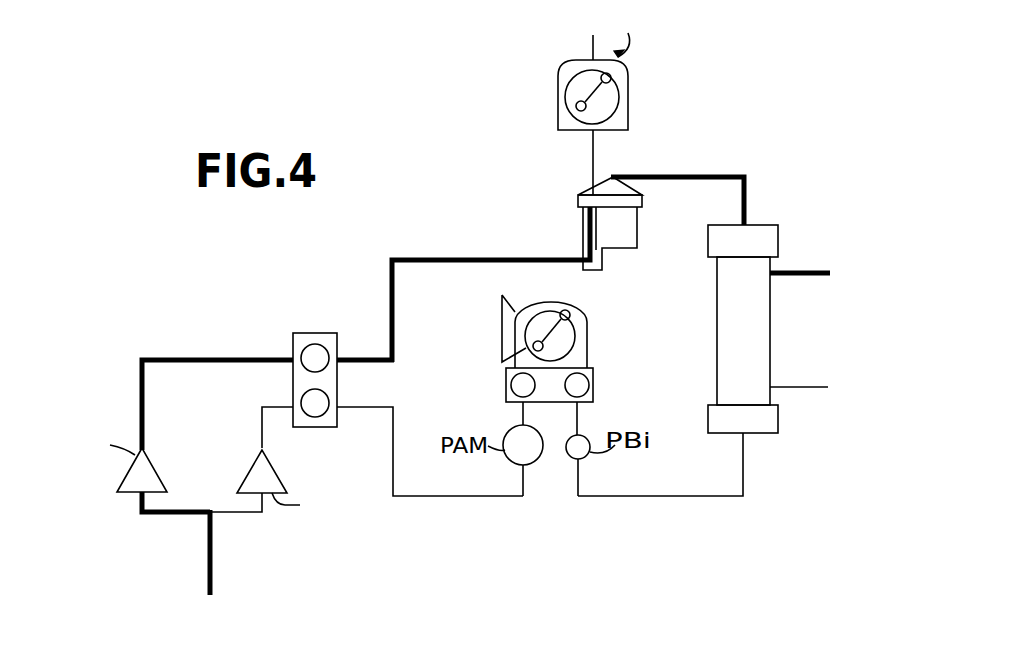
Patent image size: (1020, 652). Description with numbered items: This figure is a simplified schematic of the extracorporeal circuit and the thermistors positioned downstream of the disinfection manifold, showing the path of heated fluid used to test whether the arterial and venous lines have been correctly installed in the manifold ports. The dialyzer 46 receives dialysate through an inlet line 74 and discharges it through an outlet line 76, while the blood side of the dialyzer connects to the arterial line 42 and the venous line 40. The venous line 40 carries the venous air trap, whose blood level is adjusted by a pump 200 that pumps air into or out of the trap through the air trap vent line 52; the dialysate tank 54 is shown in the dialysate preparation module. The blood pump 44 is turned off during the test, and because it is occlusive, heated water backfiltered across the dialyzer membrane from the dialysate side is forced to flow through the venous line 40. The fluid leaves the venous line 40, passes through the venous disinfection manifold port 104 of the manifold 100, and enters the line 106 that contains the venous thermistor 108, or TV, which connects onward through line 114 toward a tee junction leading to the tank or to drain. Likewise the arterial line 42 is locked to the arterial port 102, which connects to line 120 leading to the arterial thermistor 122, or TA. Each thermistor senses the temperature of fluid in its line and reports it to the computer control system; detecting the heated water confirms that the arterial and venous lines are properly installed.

The pump 200 is at (628, 80).
The air trap vent line 52 is at (593, 157).
The dialysate tank 54 is at (637, 241).
The venous line 40 is at (478, 242).
The line 106 is at (208, 358).
The valve block 100 is at (337, 386).
The venous disinfection manifold port 104 is at (307, 357).
The arterial port 102 is at (322, 411).
The line 120 is at (273, 405).
The venous thermistor 108 is at (117, 480).
The line 114 is at (212, 563).
The thermistor 122 is at (277, 497).
The blood pump 44 is at (593, 395).
The arterial line 42 is at (652, 496).
The dialyzer 46 is at (770, 318).
The inlet line 74 is at (800, 271).
The outlet line 76 is at (803, 388).